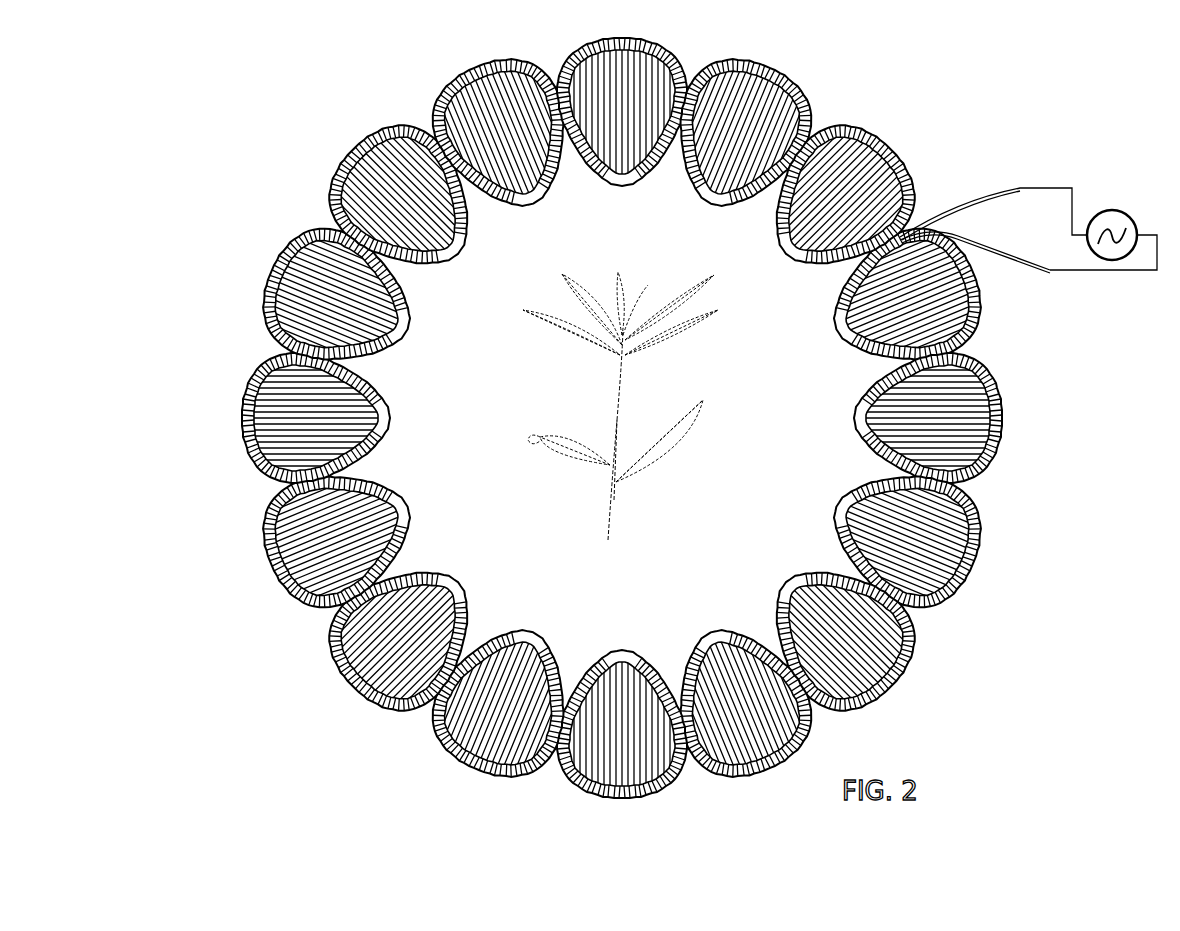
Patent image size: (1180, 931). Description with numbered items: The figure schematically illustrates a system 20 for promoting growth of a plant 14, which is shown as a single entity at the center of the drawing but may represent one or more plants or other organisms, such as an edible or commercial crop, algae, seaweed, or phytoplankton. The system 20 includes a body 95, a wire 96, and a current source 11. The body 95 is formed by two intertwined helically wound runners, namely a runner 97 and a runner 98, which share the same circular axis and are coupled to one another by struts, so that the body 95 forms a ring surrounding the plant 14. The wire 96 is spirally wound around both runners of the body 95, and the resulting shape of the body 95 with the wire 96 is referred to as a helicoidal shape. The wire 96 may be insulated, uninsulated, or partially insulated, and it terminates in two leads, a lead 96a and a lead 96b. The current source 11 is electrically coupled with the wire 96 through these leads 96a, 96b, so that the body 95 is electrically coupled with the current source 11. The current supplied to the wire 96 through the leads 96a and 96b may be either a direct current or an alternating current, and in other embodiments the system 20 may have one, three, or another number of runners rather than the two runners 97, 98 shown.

The system 20 is at (680, 418).
The wire 96 is at (613, 418).
The lead 96a is at (1000, 191).
The lead 96b is at (1020, 257).
The current source 11 is at (1125, 229).
The plant 14 is at (620, 406).
The body 95 is at (319, 714).
The runner 97 is at (271, 569).
The runner 98 is at (252, 453).